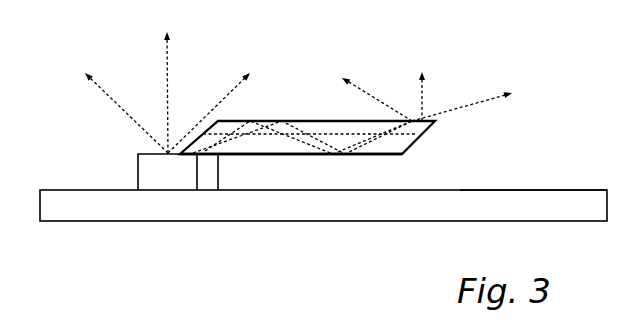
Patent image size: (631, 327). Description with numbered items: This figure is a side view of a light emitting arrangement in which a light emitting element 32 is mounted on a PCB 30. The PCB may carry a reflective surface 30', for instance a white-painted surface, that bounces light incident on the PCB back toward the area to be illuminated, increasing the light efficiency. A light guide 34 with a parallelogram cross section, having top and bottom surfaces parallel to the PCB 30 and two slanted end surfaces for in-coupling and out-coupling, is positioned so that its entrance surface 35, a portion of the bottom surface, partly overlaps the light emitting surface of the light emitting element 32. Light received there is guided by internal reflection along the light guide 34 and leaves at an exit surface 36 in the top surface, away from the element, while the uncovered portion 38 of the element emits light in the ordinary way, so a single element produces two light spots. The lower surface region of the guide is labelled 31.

The PCB 30 is at (323, 254).
The reflective surface 30' is at (533, 153).
The lower surface of light guide 31 is at (378, 140).
The light emitting element 32 is at (175, 175).
The light guide 34 is at (305, 120).
The entrance surface 35 is at (195, 157).
The exit surface 36 is at (412, 120).
The uncovered portion 38 is at (152, 153).